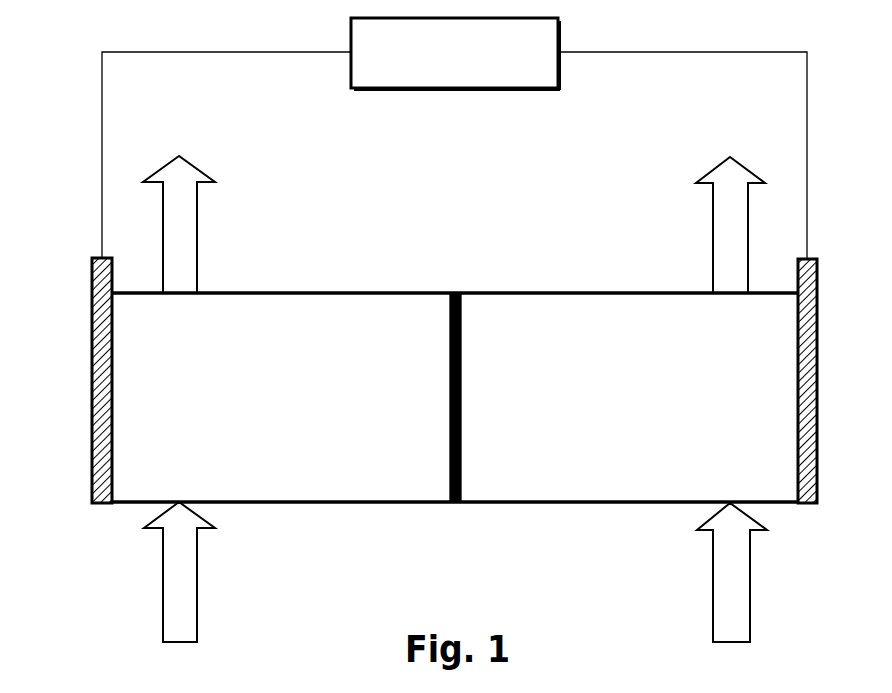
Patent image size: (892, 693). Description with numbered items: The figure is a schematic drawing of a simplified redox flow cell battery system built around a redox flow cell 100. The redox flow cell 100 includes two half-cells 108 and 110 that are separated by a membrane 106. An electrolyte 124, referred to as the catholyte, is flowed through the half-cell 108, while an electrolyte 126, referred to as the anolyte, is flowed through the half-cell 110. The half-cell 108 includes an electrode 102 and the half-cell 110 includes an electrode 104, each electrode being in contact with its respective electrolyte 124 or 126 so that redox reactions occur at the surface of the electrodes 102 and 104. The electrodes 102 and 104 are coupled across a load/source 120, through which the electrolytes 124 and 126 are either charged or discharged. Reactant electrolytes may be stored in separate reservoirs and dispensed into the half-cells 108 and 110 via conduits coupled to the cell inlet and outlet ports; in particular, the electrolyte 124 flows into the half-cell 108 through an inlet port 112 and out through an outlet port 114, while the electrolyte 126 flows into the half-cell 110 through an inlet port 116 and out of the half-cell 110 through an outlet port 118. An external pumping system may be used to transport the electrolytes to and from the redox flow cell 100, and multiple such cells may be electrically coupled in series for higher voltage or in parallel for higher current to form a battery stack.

The redox flow cell 100 is at (78, 300).
The electrode 102 is at (112, 385).
The electrode 104 is at (797, 370).
The membrane 106 is at (453, 293).
The half-cell 108 is at (313, 306).
The half-cell 110 is at (568, 306).
The inlet port 112 is at (197, 582).
The outlet port 114 is at (197, 229).
The inlet port 116 is at (750, 585).
The outlet port 118 is at (713, 218).
The load/source 120 is at (455, 54).
The electrolyte 124 is at (283, 483).
The electrolyte 126 is at (626, 483).